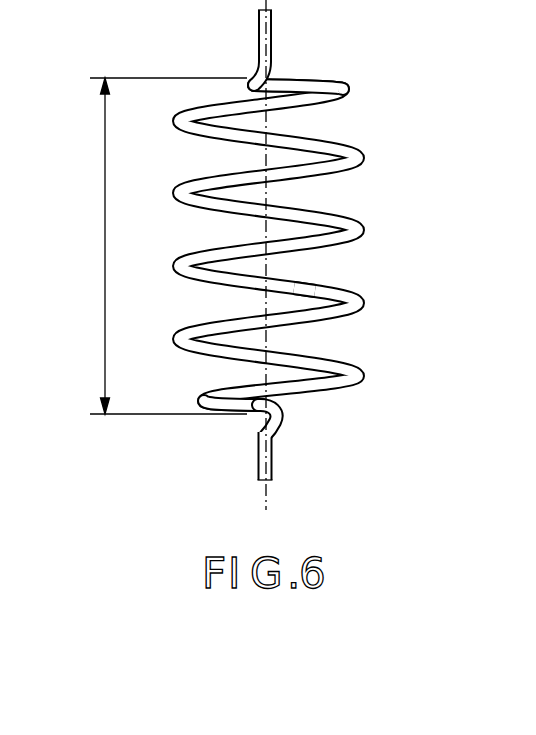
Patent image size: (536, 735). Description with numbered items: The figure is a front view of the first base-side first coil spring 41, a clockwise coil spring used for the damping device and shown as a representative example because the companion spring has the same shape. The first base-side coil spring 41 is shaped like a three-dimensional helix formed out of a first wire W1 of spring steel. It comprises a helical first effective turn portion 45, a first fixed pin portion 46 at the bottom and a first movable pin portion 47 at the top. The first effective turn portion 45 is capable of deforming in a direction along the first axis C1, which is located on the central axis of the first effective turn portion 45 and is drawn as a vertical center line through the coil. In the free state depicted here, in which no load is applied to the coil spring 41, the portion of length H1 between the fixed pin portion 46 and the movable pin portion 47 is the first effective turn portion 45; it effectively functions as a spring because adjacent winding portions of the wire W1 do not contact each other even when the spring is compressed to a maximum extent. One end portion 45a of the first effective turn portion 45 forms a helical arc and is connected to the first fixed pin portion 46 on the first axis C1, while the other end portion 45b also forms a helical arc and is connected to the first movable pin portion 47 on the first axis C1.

The first base-side first coil spring 41 is at (279, 247).
The first effective turn portion 45 is at (273, 263).
The one end portion 45a is at (252, 412).
The other end portion 45b is at (293, 79).
The first fixed pin portion 46 is at (274, 455).
The first movable pin portion 47 is at (275, 40).
The first axis C1 is at (262, 162).
The length H1 is at (104, 232).
The first wire W1 is at (312, 283).